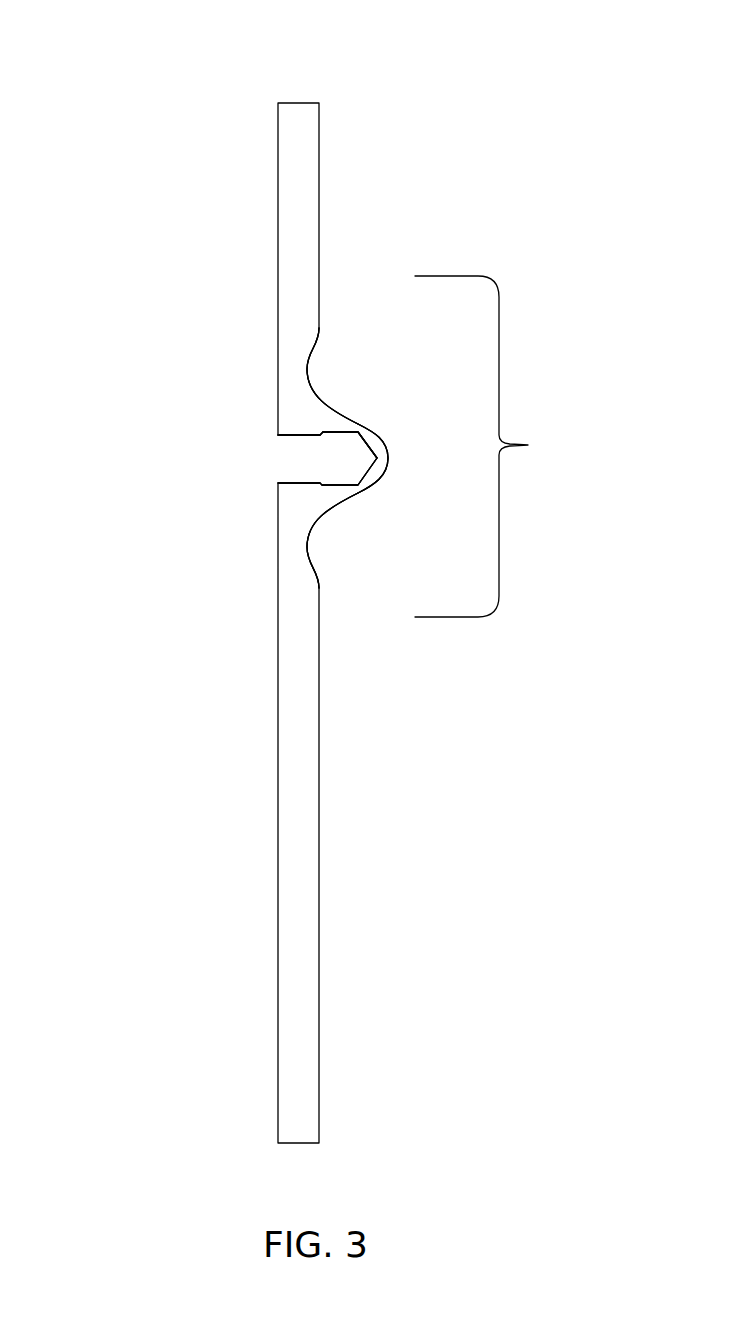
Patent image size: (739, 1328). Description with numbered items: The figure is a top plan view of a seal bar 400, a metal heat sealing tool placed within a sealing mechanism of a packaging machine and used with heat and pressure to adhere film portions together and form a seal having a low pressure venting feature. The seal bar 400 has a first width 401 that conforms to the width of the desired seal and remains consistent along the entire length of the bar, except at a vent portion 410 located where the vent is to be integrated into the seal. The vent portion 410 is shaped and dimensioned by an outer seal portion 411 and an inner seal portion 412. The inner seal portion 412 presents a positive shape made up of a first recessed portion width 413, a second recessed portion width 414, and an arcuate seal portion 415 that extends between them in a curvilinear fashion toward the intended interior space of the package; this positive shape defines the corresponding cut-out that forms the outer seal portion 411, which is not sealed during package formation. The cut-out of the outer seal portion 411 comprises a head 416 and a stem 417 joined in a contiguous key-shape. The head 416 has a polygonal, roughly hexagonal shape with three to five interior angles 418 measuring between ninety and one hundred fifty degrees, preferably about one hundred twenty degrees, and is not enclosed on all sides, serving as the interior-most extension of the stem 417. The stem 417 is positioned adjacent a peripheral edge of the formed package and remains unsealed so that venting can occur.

The seal bar 400 is at (321, 577).
The first width 401 is at (305, 1066).
The vent portion 410 is at (459, 418).
The outer seal portion 411 is at (234, 454).
The inner seal portion 412 is at (470, 305).
The first recessed portion width 413 is at (307, 369).
The second recessed portion width 414 is at (308, 547).
The arcuate seal portion 415 is at (388, 474).
The head 416 is at (320, 434).
The stem 417 is at (293, 458).
The interior angles 418 is at (358, 432).